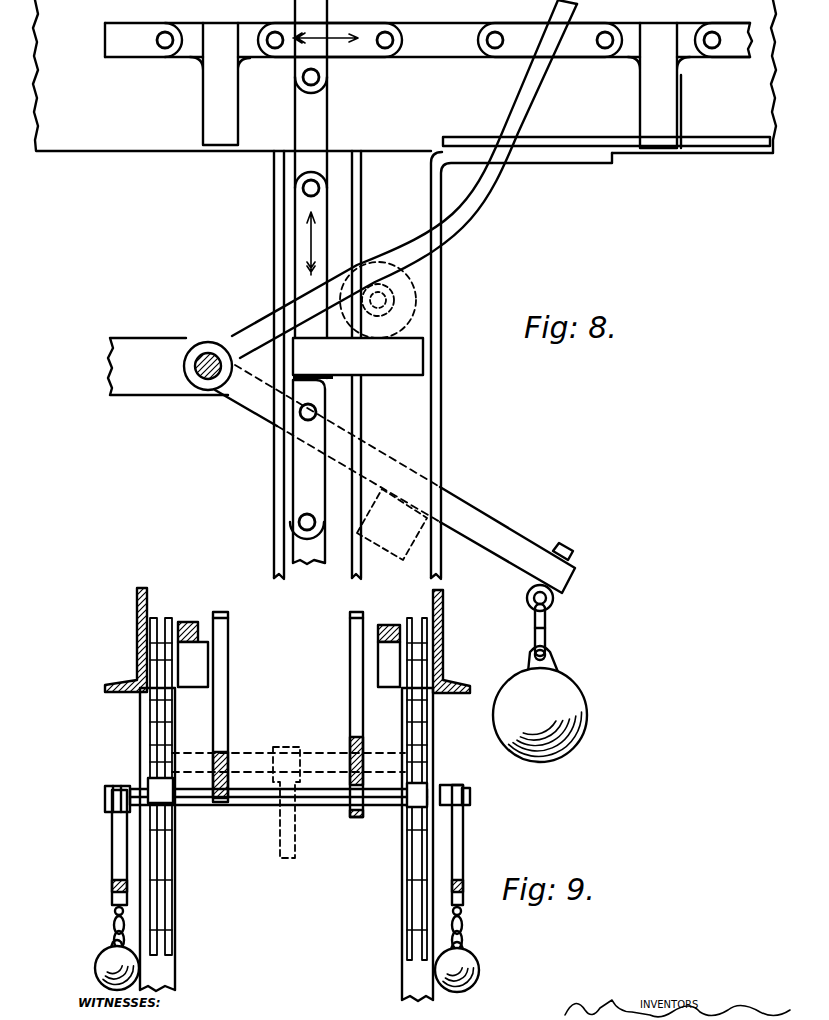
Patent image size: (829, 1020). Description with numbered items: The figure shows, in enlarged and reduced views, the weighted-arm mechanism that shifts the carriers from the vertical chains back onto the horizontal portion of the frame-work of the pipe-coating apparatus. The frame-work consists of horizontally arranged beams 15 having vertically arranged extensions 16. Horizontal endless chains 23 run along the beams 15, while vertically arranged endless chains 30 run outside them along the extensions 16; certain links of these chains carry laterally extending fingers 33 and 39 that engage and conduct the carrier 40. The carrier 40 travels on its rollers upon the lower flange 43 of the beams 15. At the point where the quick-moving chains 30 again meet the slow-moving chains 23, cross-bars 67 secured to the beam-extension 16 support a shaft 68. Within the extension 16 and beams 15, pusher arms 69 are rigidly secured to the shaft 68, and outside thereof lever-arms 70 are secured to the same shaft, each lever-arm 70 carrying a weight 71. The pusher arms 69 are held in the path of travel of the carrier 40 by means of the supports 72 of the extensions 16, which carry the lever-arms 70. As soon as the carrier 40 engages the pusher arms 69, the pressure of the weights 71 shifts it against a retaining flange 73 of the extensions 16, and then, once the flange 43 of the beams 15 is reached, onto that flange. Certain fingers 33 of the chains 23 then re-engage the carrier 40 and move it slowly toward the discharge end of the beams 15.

In FIG. 8, the beams 15 is at (110, 140).
In FIG. 9, the beams 15 is at (137, 637).
In FIG. 8, the extensions 16 is at (290, 482).
In FIG. 9, the extensions 16 is at (165, 975).
In FIG. 8, the endless chains 23 is at (430, 48).
In FIG. 9, the endless chains 23 is at (183, 625).
In FIG. 8, the endless chains 30 is at (296, 235).
In FIG. 9, the endless chains 30 is at (160, 718).
In FIG. 8, the fingers 33 is at (205, 107).
In FIG. 9, the fingers 33 is at (193, 653).
In FIG. 8, the fingers 39 is at (427, 361).
In FIG. 9, the fingers 39 is at (155, 790).
In FIG. 8, the carrier 40 is at (418, 300).
In FIG. 8, the flange 43 is at (695, 150).
In FIG. 8, the cross-bars 67 is at (155, 385).
In FIG. 8, the shaft 68 is at (208, 350).
In FIG. 9, the shaft 68 is at (252, 810).
In FIG. 8, the pusher arms 69 is at (450, 217).
In FIG. 9, the pusher arms 69 is at (232, 683).
In FIG. 8, the lever-arms 70 is at (472, 518).
In FIG. 9, the lever-arms 70 is at (118, 858).
In FIG. 8, the weight 71 is at (580, 722).
In FIG. 9, the weight 71 is at (108, 965).
In FIG. 8, the supports 72 is at (440, 560).
In FIG. 8, the retaining flange 73 is at (436, 447).